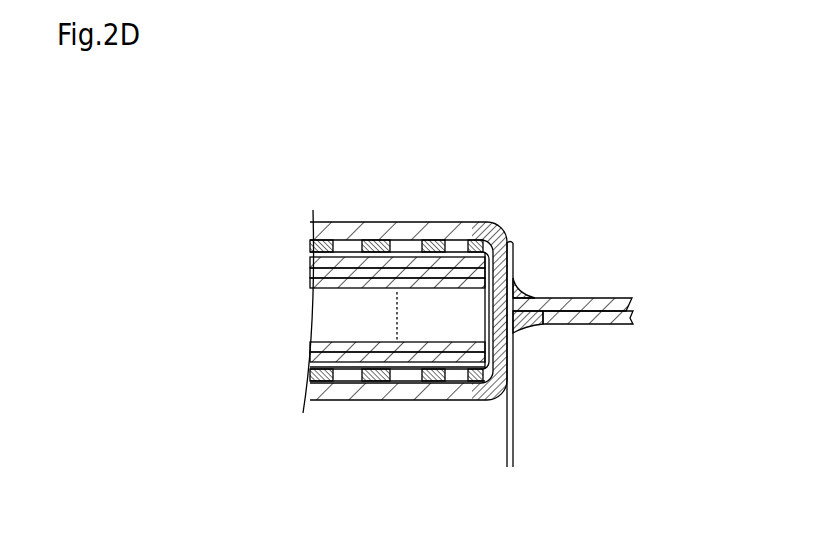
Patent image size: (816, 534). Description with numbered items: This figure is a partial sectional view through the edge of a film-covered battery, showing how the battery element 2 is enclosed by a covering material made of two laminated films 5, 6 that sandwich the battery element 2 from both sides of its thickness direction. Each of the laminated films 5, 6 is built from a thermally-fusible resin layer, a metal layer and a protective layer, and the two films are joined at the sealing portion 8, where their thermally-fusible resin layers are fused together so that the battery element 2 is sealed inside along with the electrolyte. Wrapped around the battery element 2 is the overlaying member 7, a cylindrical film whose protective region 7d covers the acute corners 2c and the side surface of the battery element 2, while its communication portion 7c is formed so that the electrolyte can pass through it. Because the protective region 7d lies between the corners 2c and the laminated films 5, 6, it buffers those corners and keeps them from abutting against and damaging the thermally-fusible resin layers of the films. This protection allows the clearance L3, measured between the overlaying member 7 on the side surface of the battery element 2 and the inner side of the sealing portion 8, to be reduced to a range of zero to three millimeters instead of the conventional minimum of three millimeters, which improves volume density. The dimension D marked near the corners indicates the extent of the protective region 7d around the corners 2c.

The battery element 2 is at (302, 257).
The corners of battery element 2c is at (492, 222).
The laminated film 5 is at (589, 298).
The laminated film 6 is at (630, 320).
The overlaying member 7 is at (490, 322).
The communication portion 7c is at (348, 244).
The protective region 7d is at (545, 297).
The sealing portion 8 is at (632, 331).
The dimension D is at (517, 290).
The clearance L3 is at (475, 442).